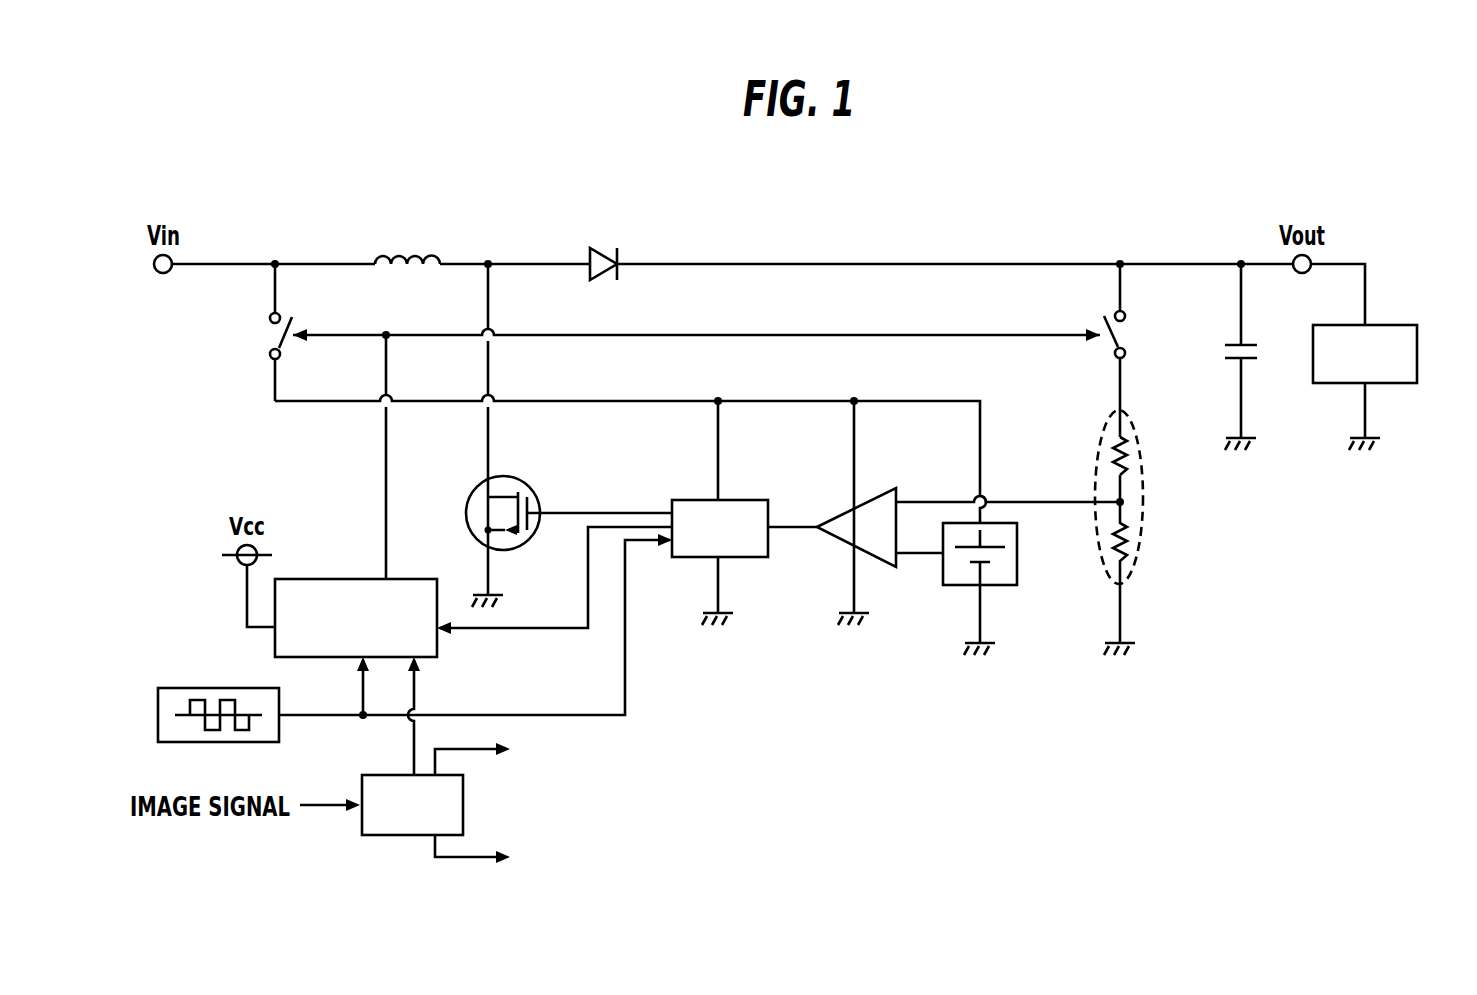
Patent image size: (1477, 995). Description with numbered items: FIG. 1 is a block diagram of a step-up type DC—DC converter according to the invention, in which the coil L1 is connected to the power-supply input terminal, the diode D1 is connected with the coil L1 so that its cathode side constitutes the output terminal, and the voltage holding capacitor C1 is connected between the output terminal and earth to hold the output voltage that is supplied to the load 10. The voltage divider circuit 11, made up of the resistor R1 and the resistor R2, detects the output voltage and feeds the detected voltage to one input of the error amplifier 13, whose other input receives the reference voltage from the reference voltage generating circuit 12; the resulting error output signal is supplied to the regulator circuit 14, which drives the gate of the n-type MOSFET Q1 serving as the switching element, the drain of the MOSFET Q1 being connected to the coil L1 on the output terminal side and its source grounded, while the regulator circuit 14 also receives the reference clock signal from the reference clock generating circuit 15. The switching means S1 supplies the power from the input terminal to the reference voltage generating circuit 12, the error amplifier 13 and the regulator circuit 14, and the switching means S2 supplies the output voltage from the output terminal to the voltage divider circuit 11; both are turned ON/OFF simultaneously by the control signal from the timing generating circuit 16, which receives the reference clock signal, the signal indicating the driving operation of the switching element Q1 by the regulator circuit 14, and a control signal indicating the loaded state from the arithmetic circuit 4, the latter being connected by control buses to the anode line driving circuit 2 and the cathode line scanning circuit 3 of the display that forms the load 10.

The anode line driving circuit 2 is at (485, 755).
The cathode line scanning circuit 3 is at (485, 854).
The arithmetic circuit 4 is at (388, 775).
The load 10 is at (1418, 355).
The voltage divider circuit 11 is at (1113, 532).
The reference voltage generating circuit 12 is at (1020, 555).
The error amplifier 13 is at (835, 517).
The regulator circuit 14 is at (696, 500).
The reference clock generating circuit 15 is at (218, 688).
The timing generating circuit 16 is at (405, 579).
The coil L1 is at (414, 256).
The diode D1 is at (595, 249).
The switching means S1 is at (290, 342).
The switching means S2 is at (1100, 342).
The n-type MOSFET Q1 is at (520, 480).
The voltage holding capacitor C1 is at (1223, 352).
The resistor R1 is at (1140, 457).
The resistor R2 is at (1140, 547).